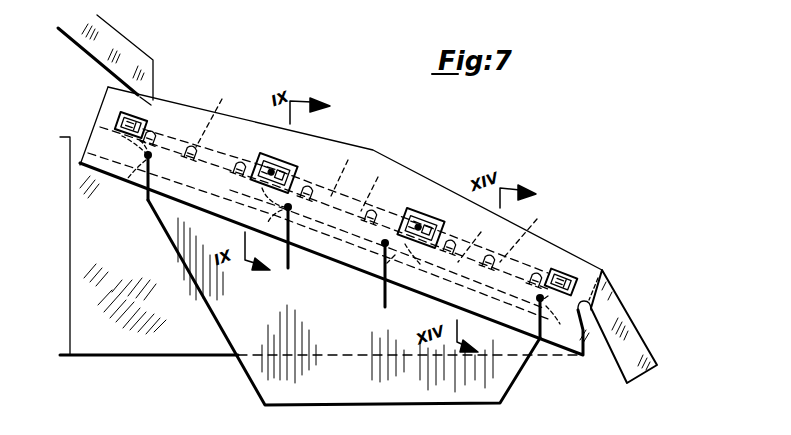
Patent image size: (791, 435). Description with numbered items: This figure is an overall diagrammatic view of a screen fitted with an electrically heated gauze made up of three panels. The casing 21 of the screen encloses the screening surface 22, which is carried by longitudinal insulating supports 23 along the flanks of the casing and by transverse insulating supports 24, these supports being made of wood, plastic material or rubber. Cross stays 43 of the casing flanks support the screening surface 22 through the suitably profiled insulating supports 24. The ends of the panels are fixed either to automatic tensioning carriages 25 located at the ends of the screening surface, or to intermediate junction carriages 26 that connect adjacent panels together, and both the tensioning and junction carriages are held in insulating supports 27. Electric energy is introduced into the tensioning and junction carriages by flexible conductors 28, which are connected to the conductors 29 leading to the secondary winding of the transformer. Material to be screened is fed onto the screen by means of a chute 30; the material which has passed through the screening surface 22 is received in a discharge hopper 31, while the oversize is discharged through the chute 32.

The casing 21 is at (405, 166).
The screening surface 22 is at (346, 170).
The longitudinal insulating supports 23 is at (378, 184).
The transverse insulating supports 24 is at (379, 174).
The automatic tensioning carriages 25 is at (122, 120).
The intermediate junction carriages 26 is at (276, 170).
The insulating supports 27 is at (148, 118).
The flexible conductors 28 is at (343, 240).
The conductors 29 is at (147, 202).
The chute 30 is at (134, 52).
The discharge hopper 31 is at (363, 390).
The chute 32 is at (623, 368).
The cross stays 43 is at (195, 162).